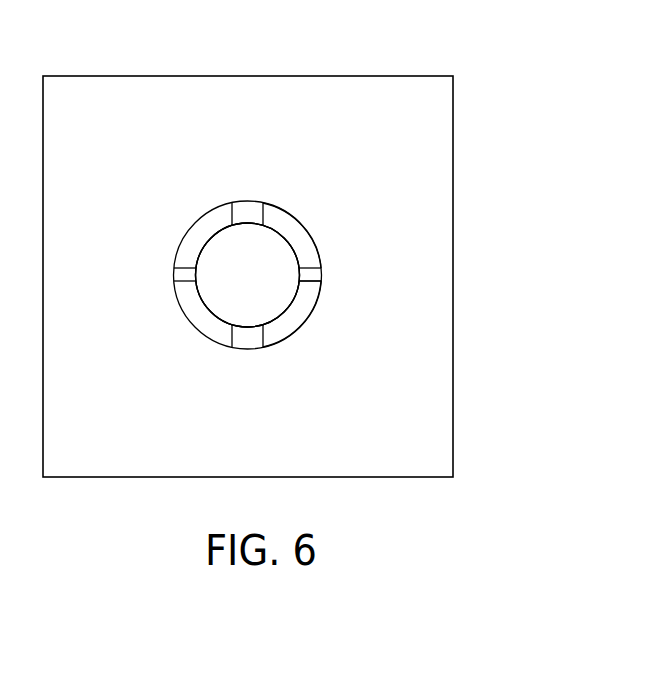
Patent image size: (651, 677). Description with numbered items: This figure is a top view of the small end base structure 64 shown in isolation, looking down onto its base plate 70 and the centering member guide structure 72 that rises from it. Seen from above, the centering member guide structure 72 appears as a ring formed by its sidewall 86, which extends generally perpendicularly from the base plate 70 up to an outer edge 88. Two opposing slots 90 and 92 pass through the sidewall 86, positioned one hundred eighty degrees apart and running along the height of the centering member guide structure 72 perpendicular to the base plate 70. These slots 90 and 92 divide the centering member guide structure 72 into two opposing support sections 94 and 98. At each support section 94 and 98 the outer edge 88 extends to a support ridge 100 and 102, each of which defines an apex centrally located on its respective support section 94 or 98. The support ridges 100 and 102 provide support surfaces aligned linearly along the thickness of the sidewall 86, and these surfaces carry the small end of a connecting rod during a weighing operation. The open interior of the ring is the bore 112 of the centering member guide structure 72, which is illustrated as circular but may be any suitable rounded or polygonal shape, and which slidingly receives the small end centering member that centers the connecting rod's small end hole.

The small end base structure 64 is at (508, 88).
The base plate 70 is at (435, 333).
The centering member guide structure 72 is at (318, 212).
The sidewall 86 is at (293, 322).
The outer edge 88 is at (308, 253).
The slot 90 is at (246, 211).
The slot 92 is at (247, 342).
The support section 94 is at (165, 270).
The support section 98 is at (333, 273).
The support ridge 100 is at (196, 276).
The support ridge 102 is at (311, 281).
The bore 112 is at (220, 250).